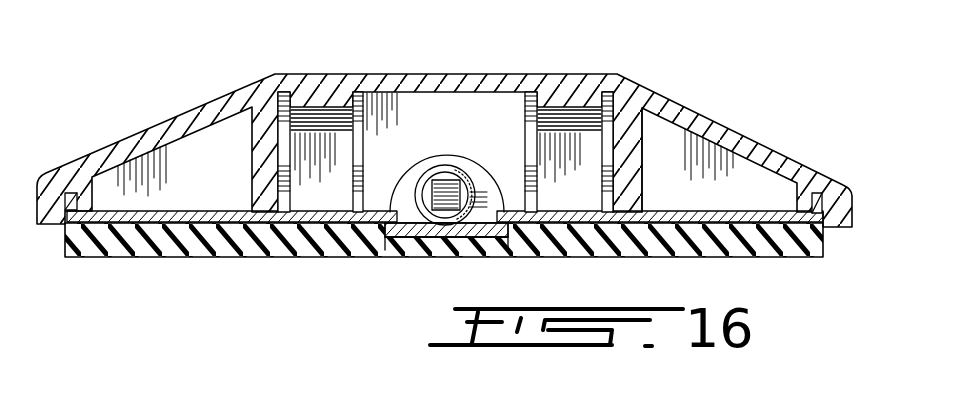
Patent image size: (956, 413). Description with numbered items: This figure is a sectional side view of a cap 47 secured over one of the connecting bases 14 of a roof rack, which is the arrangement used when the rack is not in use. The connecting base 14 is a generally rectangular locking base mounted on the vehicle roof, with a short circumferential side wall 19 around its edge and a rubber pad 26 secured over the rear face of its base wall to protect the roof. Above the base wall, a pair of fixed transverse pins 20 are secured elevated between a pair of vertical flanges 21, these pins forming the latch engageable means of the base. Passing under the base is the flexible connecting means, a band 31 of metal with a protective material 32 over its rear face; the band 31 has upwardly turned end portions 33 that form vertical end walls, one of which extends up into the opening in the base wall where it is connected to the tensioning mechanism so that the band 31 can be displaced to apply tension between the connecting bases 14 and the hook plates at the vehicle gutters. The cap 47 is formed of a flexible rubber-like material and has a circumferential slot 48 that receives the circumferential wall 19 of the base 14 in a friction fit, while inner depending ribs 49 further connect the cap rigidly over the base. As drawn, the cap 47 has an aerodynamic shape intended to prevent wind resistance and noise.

The connecting base 14 is at (187, 224).
The circumferential side wall 19 is at (62, 207).
The transverse pins 20 is at (338, 117).
The vertical flanges 21 is at (288, 97).
The rubber pad 26 is at (610, 240).
The band 31 is at (483, 240).
The protective material 32 is at (422, 240).
The end portions 33 is at (485, 182).
The cap 47 is at (481, 68).
The circumferential slot 48 is at (815, 195).
The inner depending ribs 49 is at (596, 103).